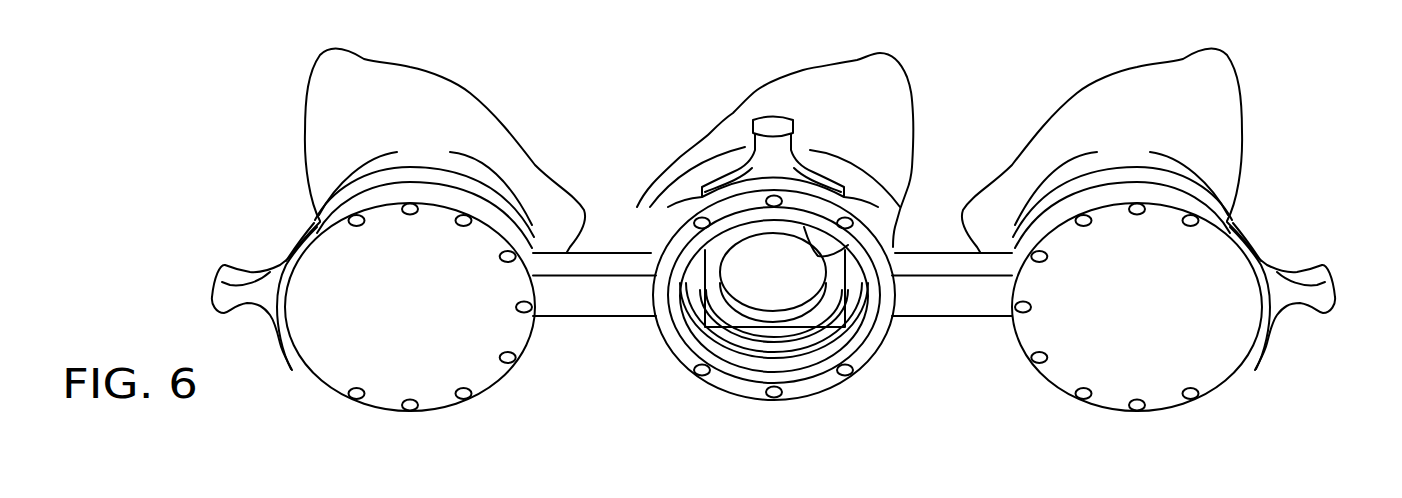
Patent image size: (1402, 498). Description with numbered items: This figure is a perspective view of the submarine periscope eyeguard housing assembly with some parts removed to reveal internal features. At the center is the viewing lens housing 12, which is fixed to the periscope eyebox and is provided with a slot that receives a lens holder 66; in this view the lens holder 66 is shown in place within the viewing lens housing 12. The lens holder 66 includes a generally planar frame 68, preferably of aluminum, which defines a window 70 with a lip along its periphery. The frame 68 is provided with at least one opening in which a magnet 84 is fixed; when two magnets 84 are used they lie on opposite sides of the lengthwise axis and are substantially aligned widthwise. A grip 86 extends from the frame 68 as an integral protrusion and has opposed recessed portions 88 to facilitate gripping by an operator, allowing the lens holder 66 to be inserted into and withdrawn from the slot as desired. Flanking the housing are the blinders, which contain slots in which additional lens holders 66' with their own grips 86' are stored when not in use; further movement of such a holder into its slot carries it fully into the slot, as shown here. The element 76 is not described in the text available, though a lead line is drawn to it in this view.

The viewing lens housing 12 is at (665, 382).
The lens holder 66 is at (764, 365).
The lens holder 66' is at (775, 299).
The frame 68 is at (830, 313).
The window 70 is at (745, 307).
The inner frame 76 is at (787, 288).
The magnet 84 is at (858, 224).
The grip 86 is at (1050, 214).
The grip 86' is at (226, 296).
The recessed portion 88 is at (752, 165).